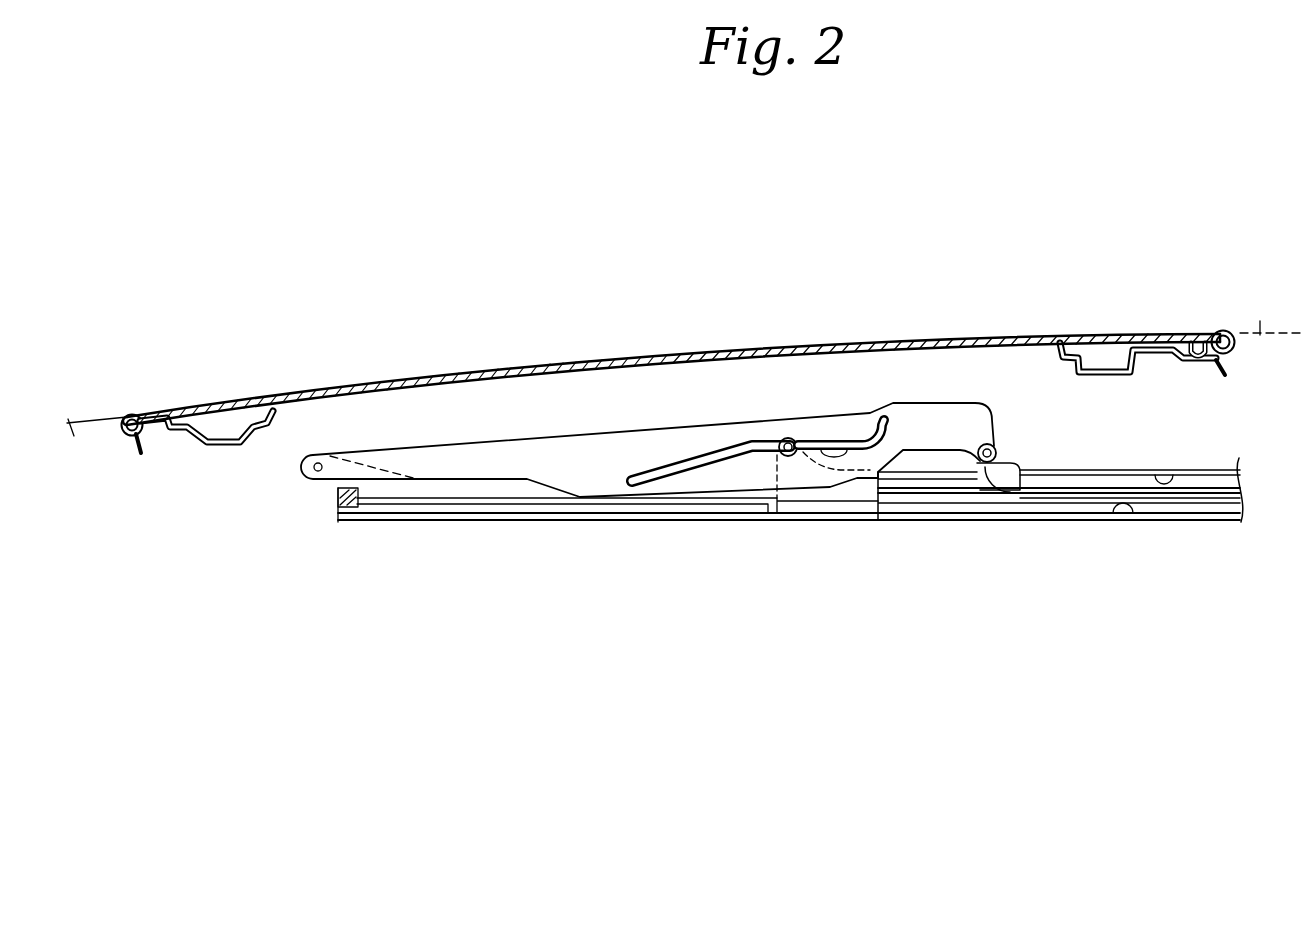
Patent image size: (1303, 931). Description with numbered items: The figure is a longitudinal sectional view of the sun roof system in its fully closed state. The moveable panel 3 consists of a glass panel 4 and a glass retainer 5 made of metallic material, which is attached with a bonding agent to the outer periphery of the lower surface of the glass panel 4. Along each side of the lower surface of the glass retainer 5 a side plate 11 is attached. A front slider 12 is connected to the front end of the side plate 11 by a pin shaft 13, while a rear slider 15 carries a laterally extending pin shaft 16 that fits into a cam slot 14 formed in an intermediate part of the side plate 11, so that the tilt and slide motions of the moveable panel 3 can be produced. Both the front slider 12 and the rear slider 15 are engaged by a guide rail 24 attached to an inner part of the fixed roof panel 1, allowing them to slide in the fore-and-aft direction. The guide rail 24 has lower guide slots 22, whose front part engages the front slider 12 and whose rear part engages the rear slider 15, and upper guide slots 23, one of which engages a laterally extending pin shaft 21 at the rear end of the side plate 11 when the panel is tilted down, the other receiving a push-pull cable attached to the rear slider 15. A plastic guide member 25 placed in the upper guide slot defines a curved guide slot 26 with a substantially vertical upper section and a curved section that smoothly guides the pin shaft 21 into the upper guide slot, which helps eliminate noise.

The fixed roof panel 1 is at (1260, 321).
The moveable panel 3 is at (1097, 328).
The glass panel 4 is at (322, 392).
The glass retainer 5 is at (222, 443).
The side plate 11 is at (565, 437).
The front slider 12 is at (403, 500).
The pin shaft 13 is at (306, 478).
The cam slot 14 is at (838, 443).
The rear slider 15 is at (823, 497).
The pin shaft 16 is at (787, 438).
The pin shaft 21 is at (993, 447).
The lower guide slots 22 is at (1133, 514).
The upper guide slots 23 is at (1173, 474).
The guide rail 24 is at (1206, 533).
The guide member 25 is at (990, 491).
The curved guide slot 26 is at (1022, 480).